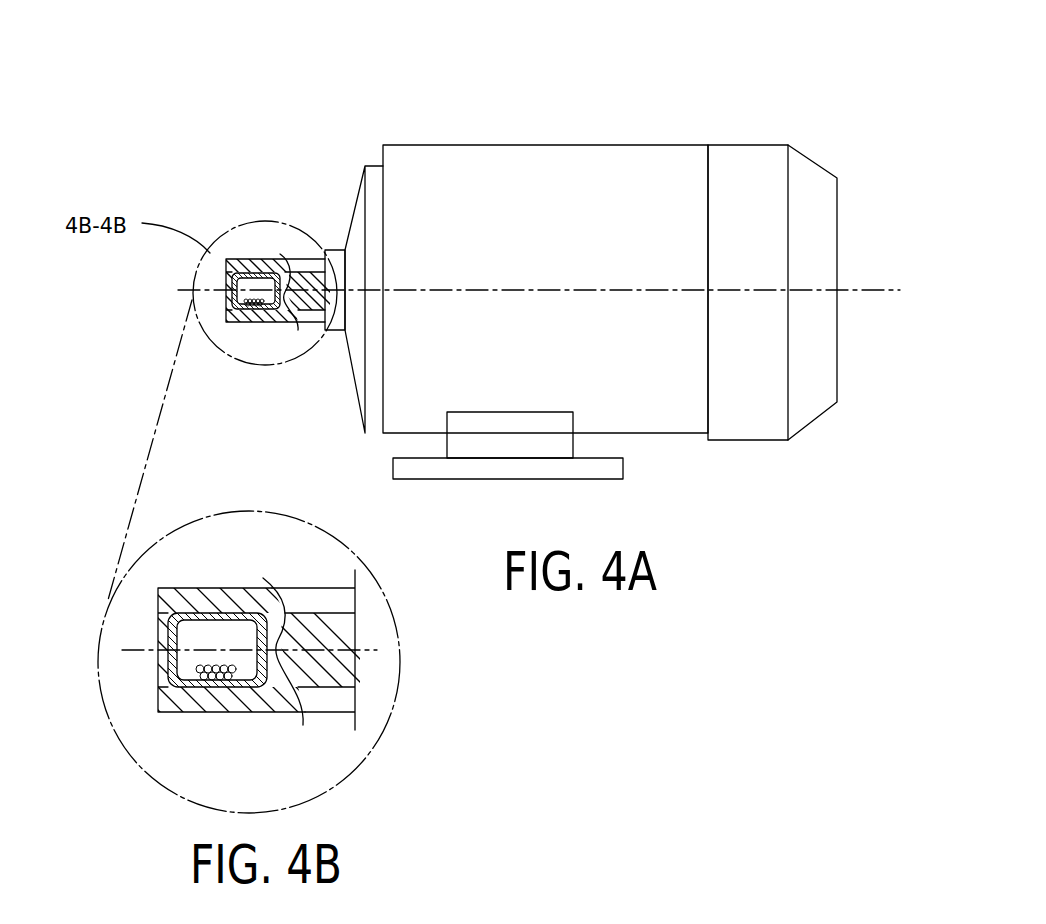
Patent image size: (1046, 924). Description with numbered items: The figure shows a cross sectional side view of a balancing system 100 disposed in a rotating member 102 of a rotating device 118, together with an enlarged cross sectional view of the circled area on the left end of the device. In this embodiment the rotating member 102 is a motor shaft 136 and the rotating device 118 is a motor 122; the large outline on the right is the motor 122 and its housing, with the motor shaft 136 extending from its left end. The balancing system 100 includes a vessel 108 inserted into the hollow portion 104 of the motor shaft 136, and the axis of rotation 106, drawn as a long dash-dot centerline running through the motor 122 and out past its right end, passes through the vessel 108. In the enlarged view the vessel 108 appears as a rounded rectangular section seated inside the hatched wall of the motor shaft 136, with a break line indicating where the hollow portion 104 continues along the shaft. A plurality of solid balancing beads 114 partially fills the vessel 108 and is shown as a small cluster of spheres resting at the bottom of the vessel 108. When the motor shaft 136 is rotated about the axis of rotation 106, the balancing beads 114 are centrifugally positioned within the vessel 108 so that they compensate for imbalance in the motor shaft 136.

In FIG. 4B, the balancing system 100 is at (224, 678).
In FIG. 4A, the rotating member 102 is at (252, 247).
In FIG. 4B, the hollow portion 104 is at (273, 625).
In FIG. 4A, the axis of rotation 106 is at (870, 288).
In FIG. 4B, the vessel 108 is at (168, 633).
In FIG. 4B, the solid balancing beads 114 is at (173, 670).
In FIG. 4A, the rotating device 118 is at (581, 267).
In FIG. 4A, the motor 122 is at (593, 145).
In FIG. 4A, the motor shaft 136 is at (305, 258).